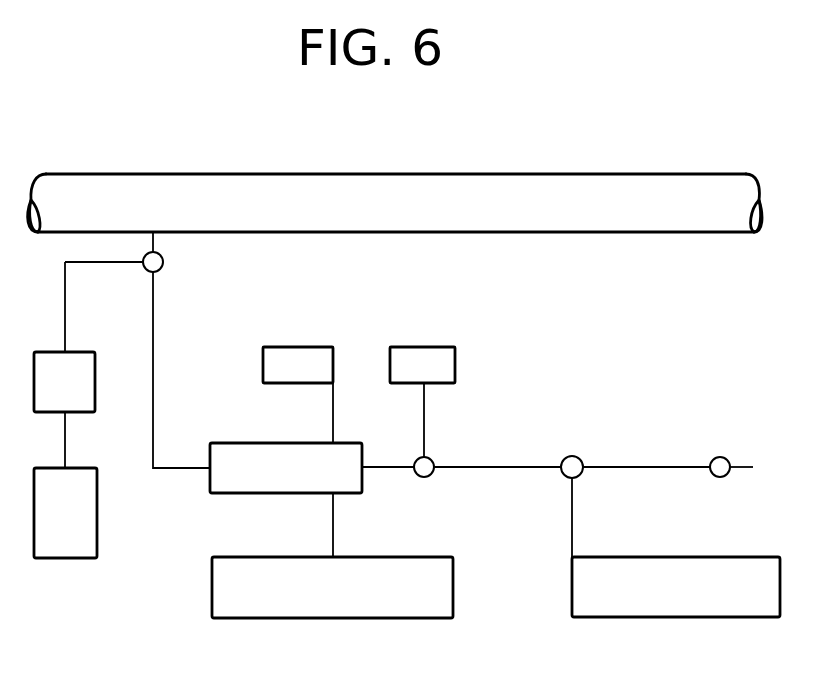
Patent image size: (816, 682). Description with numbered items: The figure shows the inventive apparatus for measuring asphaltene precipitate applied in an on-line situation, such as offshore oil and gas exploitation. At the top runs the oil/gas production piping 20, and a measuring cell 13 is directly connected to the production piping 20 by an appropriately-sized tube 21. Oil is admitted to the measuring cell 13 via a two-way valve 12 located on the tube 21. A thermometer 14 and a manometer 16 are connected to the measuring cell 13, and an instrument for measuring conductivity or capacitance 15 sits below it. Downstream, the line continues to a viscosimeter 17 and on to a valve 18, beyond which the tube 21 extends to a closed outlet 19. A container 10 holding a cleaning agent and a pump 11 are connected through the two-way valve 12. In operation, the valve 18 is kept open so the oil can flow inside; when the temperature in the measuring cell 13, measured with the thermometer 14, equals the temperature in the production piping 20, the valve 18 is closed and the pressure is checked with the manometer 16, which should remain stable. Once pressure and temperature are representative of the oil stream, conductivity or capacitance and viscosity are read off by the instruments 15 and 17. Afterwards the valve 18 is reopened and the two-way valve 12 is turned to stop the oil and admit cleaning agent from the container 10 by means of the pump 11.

The oil/gas production piping 20 is at (391, 215).
The two-way valve 12 is at (163, 262).
The tube 21 is at (153, 325).
The pump 11 is at (79, 398).
The container 10 is at (79, 532).
The measuring cell 13 is at (302, 480).
The thermometer 14 is at (312, 379).
The instrument for measuring conductivity (or capacitance) 15 is at (352, 603).
The manometer 16 is at (437, 379).
The viscosimeter 17 is at (694, 603).
The valve 18 is at (717, 476).
The outlet line 19 is at (753, 468).